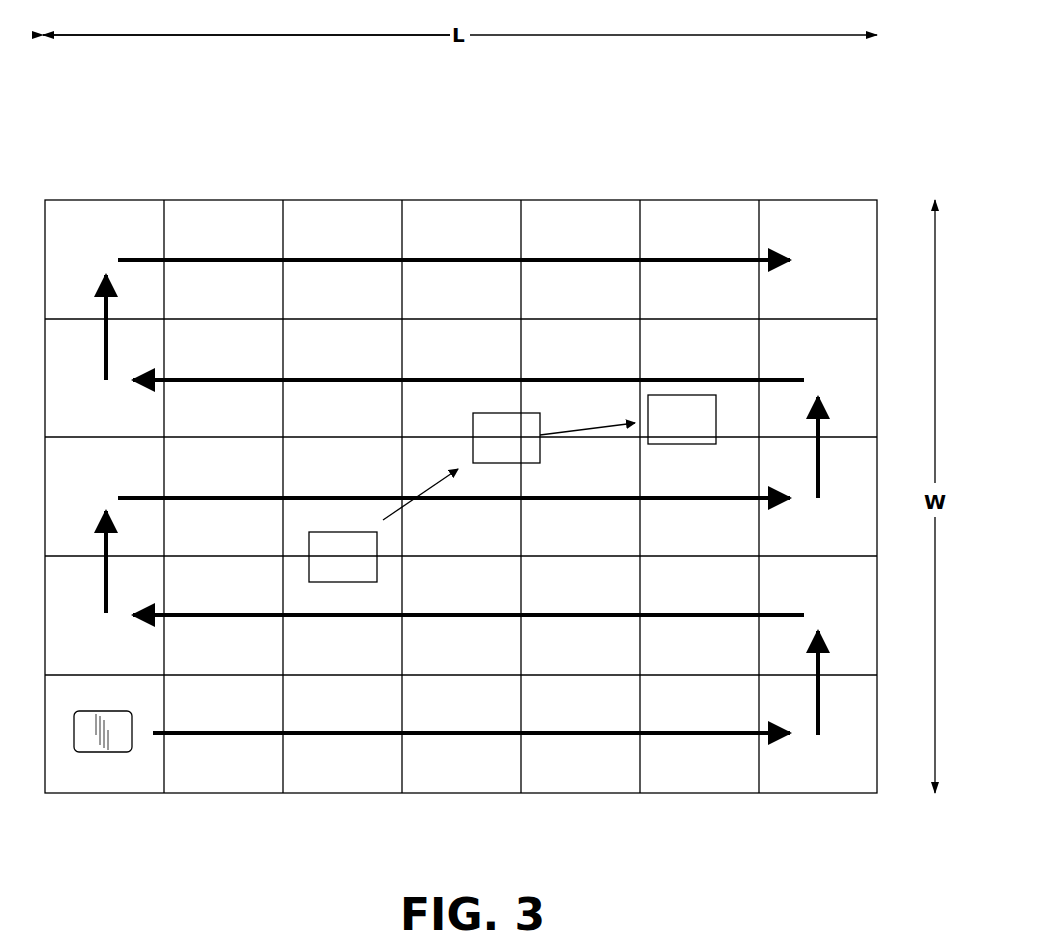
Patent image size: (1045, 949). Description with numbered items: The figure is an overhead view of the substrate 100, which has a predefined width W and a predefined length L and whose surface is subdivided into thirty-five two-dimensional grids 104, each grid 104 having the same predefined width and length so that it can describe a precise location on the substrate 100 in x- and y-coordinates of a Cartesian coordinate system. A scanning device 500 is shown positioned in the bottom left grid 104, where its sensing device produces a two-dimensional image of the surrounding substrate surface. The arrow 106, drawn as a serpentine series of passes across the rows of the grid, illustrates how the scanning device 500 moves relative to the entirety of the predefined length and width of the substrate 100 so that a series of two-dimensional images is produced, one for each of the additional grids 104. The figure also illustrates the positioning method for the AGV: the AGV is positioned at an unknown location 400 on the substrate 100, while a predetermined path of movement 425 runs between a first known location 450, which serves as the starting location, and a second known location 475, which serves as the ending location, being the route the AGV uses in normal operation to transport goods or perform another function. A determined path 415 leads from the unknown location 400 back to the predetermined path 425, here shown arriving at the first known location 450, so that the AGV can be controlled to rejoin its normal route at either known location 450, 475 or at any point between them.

The substrate 100 is at (648, 172).
The grid 104 is at (113, 233).
The arrow 106 is at (328, 257).
The unknown location 400 is at (335, 583).
The determined path 415 is at (455, 470).
The predetermined path of movement 425 is at (593, 428).
The first known location 450 is at (499, 426).
The second known location 475 is at (679, 393).
The scanning device 500 is at (92, 742).